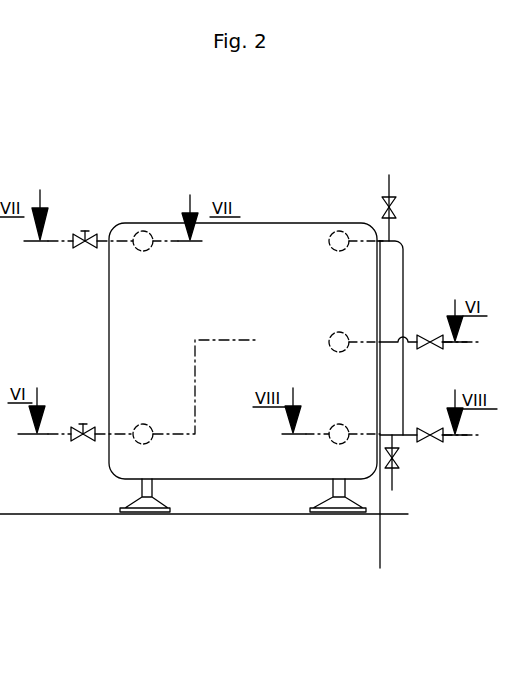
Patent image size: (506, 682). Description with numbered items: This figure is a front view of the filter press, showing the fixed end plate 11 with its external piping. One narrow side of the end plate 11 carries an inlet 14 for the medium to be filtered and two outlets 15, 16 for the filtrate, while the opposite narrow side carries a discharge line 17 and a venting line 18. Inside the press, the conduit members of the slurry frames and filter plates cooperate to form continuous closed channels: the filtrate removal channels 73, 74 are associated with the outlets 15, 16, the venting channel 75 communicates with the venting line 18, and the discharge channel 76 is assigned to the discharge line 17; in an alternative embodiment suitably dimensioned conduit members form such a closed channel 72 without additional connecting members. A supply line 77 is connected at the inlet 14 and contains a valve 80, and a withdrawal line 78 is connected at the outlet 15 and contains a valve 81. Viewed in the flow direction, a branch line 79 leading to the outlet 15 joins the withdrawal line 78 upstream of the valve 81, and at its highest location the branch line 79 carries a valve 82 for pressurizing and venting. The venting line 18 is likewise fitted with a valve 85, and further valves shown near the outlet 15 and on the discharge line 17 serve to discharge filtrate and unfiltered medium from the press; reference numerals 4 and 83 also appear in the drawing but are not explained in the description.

The shut-off valve 4 is at (70, 437).
The end plate 11 is at (248, 245).
The inlet 14 is at (381, 345).
The outlet 15 is at (379, 421).
The outlet 16 is at (380, 245).
The discharge line 17 is at (104, 437).
The venting line 18 is at (106, 243).
The closed channel 72 is at (332, 337).
The filtrate removal channel 73 is at (332, 437).
The filtrate removal channel 74 is at (340, 240).
The venting channel 75 is at (144, 240).
The discharge channel 76 is at (143, 437).
The supply line 77 is at (402, 366).
The withdrawal line 78 is at (410, 437).
The branch line 79 is at (405, 262).
The valve 80 is at (440, 347).
The valve 81 is at (440, 440).
The valve 82 is at (399, 203).
The valve 83 is at (399, 473).
The valve 85 is at (77, 236).